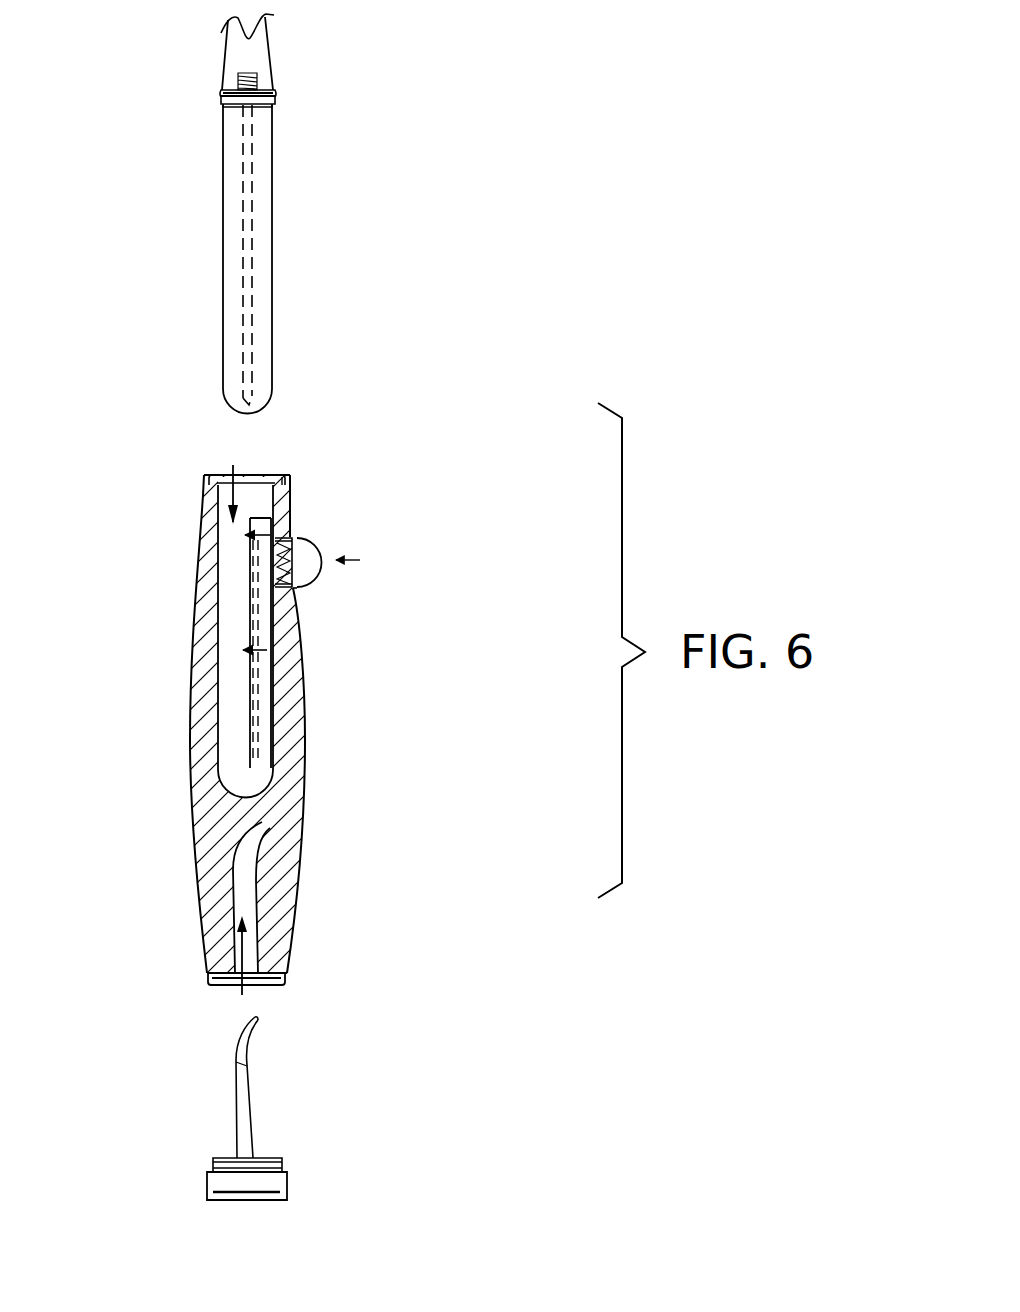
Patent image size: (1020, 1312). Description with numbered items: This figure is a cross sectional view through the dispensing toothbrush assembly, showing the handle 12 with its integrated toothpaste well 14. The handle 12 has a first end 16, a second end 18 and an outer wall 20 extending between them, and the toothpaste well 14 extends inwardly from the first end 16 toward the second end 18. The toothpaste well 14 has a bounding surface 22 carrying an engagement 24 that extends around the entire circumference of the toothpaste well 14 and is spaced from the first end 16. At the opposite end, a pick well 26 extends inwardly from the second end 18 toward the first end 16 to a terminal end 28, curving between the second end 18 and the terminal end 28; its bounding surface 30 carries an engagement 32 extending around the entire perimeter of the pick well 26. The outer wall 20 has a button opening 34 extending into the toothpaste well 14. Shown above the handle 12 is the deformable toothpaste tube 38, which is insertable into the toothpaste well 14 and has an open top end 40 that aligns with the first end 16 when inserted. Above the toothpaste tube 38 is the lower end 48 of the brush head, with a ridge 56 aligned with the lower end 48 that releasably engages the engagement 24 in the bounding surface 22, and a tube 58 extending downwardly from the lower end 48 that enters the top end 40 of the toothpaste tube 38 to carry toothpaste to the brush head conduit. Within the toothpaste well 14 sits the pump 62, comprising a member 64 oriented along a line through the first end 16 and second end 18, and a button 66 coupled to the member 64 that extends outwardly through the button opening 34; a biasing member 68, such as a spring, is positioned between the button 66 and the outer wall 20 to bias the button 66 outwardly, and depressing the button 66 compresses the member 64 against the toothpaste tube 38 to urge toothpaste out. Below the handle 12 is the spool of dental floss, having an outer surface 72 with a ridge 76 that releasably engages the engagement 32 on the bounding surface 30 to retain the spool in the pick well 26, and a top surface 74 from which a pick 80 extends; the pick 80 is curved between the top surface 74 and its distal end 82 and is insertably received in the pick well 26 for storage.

The handle 12 is at (290, 507).
The toothpaste well 14 is at (233, 470).
The first end 16 is at (282, 476).
The second end 18 is at (288, 987).
The outer wall 20 is at (303, 773).
The bounding surface 22 is at (224, 670).
The engagement 24 is at (207, 476).
The pick well 26 is at (242, 995).
The terminal end 28 is at (258, 824).
The bounding surface 30 is at (253, 912).
The engagement 32 is at (284, 972).
The button opening 34 is at (322, 545).
The toothpaste tube 38 is at (224, 207).
The top end 40 is at (250, 80).
The lower end 48 is at (273, 107).
The ridge 56 is at (222, 102).
The tube 58 is at (252, 238).
The pump 62 is at (240, 565).
The member 64 is at (268, 712).
The button 66 is at (307, 590).
The biasing member 68 is at (302, 540).
The outer surface 72 is at (215, 1163).
The top surface 74 is at (238, 1153).
The ridge 76 is at (283, 1167).
The pick 80 is at (237, 1060).
The distal end 82 is at (258, 1016).